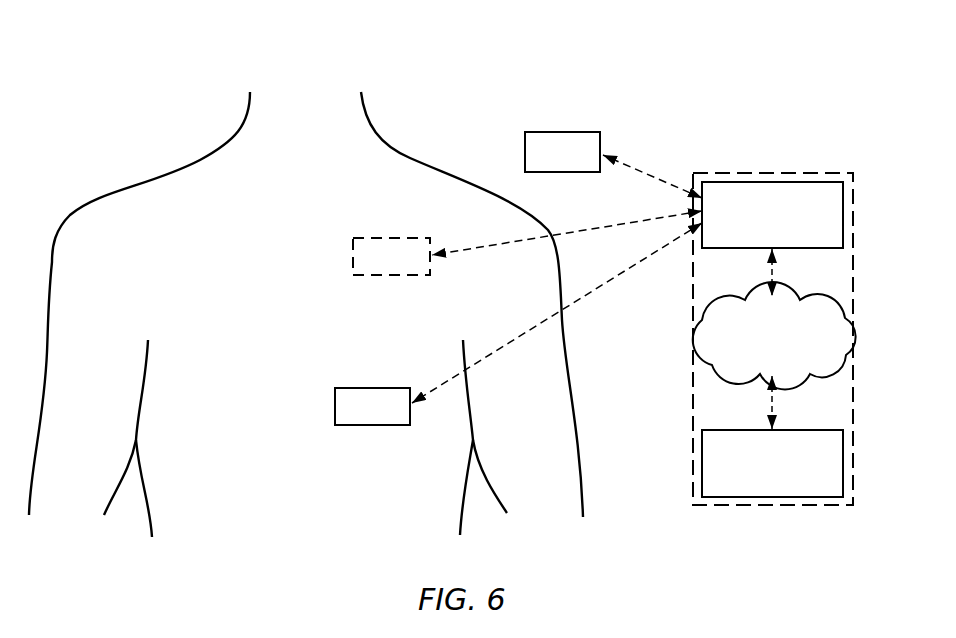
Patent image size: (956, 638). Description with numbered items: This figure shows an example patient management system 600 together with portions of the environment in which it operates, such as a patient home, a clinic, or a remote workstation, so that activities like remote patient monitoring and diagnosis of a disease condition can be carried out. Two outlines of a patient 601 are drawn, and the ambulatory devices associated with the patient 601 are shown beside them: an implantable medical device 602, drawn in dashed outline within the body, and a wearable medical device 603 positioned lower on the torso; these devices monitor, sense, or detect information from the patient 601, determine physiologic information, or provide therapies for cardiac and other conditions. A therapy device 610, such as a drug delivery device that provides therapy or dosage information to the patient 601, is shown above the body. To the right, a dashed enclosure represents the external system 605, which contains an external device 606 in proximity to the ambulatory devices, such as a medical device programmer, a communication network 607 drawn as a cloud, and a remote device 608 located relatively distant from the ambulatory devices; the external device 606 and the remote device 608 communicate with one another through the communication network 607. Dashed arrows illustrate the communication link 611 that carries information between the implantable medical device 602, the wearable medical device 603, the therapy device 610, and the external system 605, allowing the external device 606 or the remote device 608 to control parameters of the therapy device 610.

The patient management system 600 is at (803, 57).
The patient 601 is at (403, 152).
The implantable medical device 602 is at (390, 238).
The wearable medical device 603 is at (368, 388).
The external system 605 is at (853, 252).
The external device 606 is at (846, 197).
The communication network 607 is at (849, 314).
The remote device 608 is at (845, 451).
The therapy device 610 is at (565, 132).
The communication link 611 is at (638, 171).